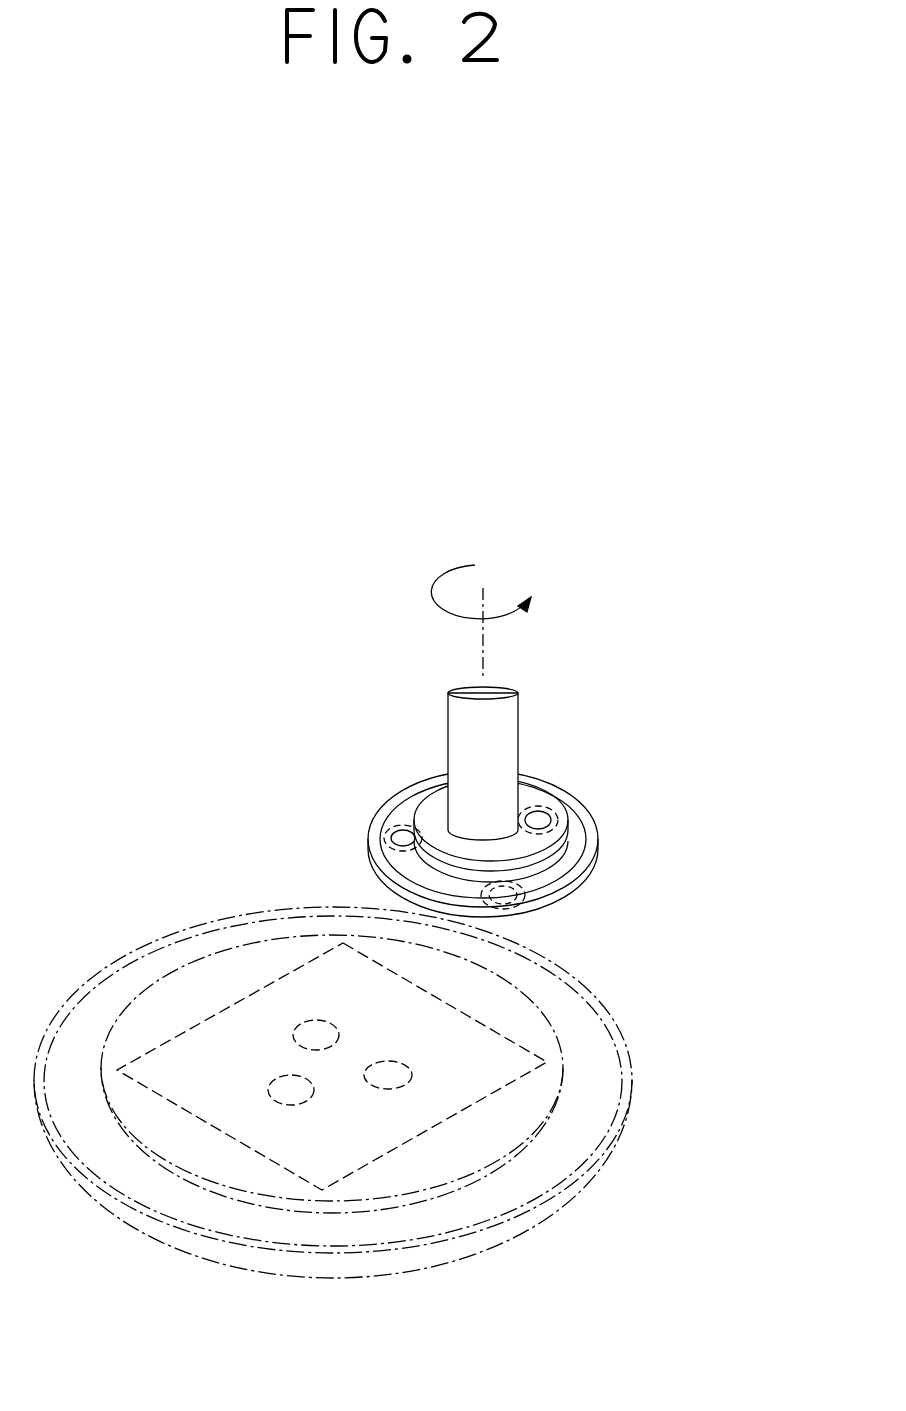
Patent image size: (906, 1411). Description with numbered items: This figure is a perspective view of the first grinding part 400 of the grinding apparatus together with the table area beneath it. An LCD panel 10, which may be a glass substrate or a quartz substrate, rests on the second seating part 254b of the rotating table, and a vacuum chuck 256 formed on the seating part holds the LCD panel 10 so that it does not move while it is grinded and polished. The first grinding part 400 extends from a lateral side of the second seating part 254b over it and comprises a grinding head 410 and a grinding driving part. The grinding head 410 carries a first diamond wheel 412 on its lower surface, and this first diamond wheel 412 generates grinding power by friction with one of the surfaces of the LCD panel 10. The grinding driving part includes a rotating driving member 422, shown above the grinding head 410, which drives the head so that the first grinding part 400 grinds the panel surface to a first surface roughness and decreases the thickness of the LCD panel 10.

The LCD panel 10 is at (253, 1150).
The second seating part 254b is at (302, 1277).
The vacuum chuck 256 is at (397, 1092).
The first grinding part 400 is at (588, 741).
The grinding head 410 is at (598, 864).
The first diamond wheel 412 is at (556, 814).
The rotating driving member 422 is at (520, 732).